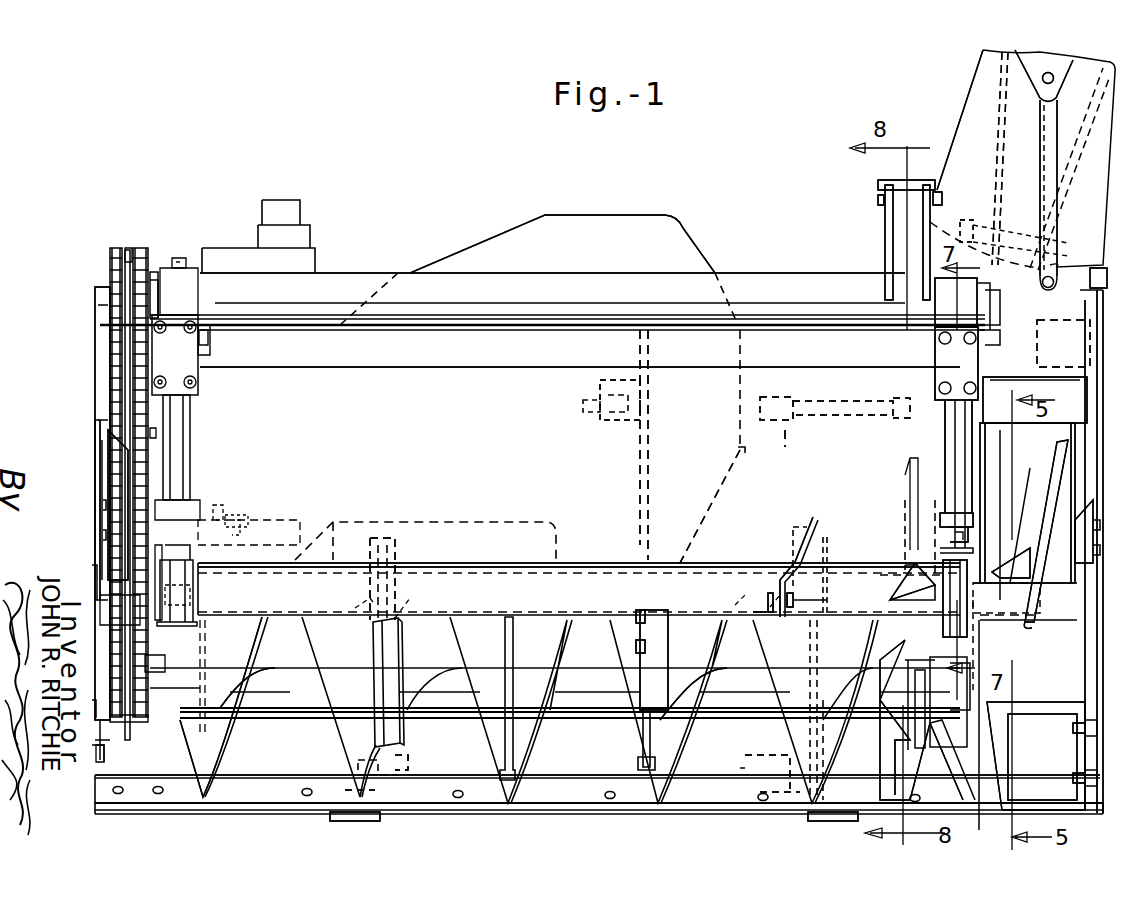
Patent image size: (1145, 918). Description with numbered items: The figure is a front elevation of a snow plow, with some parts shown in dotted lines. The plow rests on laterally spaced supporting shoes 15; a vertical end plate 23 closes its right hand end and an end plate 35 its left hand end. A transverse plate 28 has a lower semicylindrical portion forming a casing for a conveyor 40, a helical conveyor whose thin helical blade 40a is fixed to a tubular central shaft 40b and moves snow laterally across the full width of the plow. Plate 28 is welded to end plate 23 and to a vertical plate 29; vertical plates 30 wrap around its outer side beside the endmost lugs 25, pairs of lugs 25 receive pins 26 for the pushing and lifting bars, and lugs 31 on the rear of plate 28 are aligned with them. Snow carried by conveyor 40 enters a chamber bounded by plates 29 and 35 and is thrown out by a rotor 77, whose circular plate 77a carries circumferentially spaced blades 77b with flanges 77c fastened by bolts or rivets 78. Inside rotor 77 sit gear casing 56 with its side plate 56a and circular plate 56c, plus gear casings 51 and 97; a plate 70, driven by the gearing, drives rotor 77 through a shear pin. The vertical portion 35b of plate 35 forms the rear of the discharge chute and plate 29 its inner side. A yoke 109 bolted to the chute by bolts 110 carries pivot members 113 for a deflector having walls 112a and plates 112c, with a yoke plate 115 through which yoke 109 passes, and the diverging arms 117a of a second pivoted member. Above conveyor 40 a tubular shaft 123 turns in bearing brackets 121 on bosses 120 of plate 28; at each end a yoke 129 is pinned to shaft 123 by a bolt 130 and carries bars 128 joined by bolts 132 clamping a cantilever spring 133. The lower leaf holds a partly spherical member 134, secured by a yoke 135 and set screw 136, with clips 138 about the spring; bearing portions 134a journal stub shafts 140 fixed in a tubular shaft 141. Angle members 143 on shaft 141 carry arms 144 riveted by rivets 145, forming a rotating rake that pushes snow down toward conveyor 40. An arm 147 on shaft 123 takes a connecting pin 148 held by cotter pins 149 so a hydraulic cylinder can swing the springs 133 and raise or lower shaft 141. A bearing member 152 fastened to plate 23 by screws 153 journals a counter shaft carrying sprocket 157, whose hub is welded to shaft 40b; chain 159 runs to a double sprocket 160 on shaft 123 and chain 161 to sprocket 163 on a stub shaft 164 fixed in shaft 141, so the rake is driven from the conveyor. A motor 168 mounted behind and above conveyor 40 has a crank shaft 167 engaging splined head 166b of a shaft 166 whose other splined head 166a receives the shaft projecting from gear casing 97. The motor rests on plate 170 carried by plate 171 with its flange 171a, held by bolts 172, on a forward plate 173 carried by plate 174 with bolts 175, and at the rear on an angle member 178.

The supporting shoes 15 is at (345, 818).
The end plate 23 is at (597, 764).
The lugs 25 is at (410, 755).
The pins 26 is at (412, 765).
The plate 28 is at (452, 563).
The plate 29 is at (980, 767).
The plates 30 is at (368, 548).
The lugs 31 is at (390, 615).
The end plate 35 is at (1100, 640).
The vertical portion 35b is at (1100, 345).
The conveyor 40 is at (314, 735).
The helical blade 40a is at (228, 731).
The central shaft 40b is at (326, 668).
The gear casing 51 is at (895, 750).
The gear casing 56 is at (1075, 430).
The plate 56a is at (985, 472).
The circular plate 56c is at (1072, 448).
The plate 70 is at (1082, 535).
The rotor 77 is at (1073, 397).
The circular plate 77a is at (1085, 385).
The blades 77b is at (1043, 714).
The flanges 77c is at (1025, 570).
The headed bolts or rivets 78 is at (1073, 778).
The gear casing 97 is at (940, 466).
The yoke 109 is at (1040, 118).
The bolts 110 is at (1100, 272).
The walls 112a is at (985, 60).
The plates 112c is at (1032, 190).
The pivot members 113 is at (1042, 78).
The yoke plate 115 is at (968, 232).
The arms 117a is at (1028, 88).
The bosses 120 is at (212, 346).
The bearing brackets 121 is at (158, 280).
The shaft 123 is at (365, 274).
The bars 128 is at (178, 362).
The yoke 129 is at (182, 298).
The bolt 130 is at (186, 262).
The bolts 132 is at (970, 340).
The cantilever spring 133 is at (175, 468).
The member 134 is at (172, 575).
The bearing portions 134a is at (162, 600).
The yoke 135 is at (920, 640).
The set screw 136 is at (950, 537).
The clips 138 is at (942, 518).
The stub shaft 140 is at (1030, 600).
The tubular shaft 141 is at (850, 572).
The angle members 143 is at (760, 610).
The arms 144 is at (110, 493).
The rivets 145 is at (636, 645).
The arm 147 is at (925, 230).
The connecting pin 148 is at (878, 208).
The cotter pins 149 is at (878, 200).
The bearing member 152 is at (115, 750).
The headed screws 153 is at (118, 598).
The sprocket 157 is at (115, 720).
The chain 159 is at (112, 380).
The double sprocket 160 is at (128, 256).
The chain 161 is at (143, 432).
The sprocket 163 is at (148, 660).
The stub shaft 164 is at (84, 580).
The shaft 166 is at (880, 425).
The splined head 166a is at (893, 398).
The splined head 166b is at (803, 449).
The crank shaft 167 is at (755, 400).
The motor 168 is at (508, 242).
The plate 170 is at (220, 515).
The plate 171 is at (215, 545).
The flange 171a is at (252, 655).
The bolts 172 is at (243, 517).
The plate 173 is at (590, 425).
The plate 174 is at (648, 450).
The bolts 175 is at (640, 386).
The angle member 178 is at (645, 525).